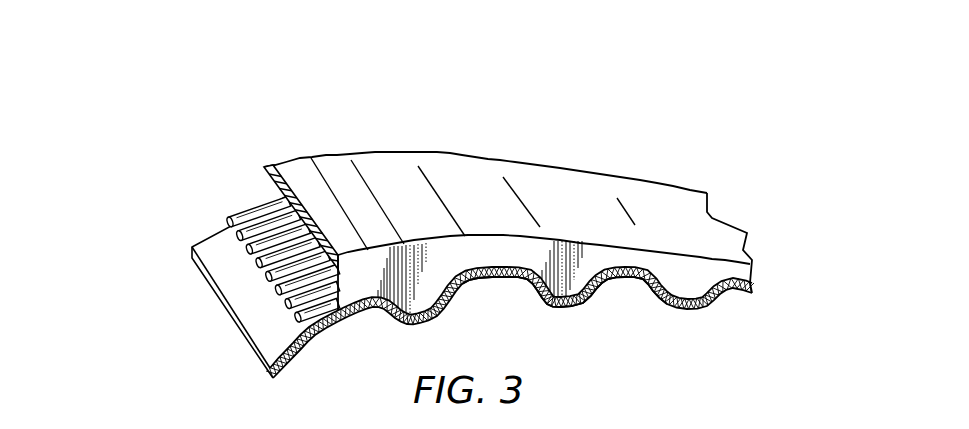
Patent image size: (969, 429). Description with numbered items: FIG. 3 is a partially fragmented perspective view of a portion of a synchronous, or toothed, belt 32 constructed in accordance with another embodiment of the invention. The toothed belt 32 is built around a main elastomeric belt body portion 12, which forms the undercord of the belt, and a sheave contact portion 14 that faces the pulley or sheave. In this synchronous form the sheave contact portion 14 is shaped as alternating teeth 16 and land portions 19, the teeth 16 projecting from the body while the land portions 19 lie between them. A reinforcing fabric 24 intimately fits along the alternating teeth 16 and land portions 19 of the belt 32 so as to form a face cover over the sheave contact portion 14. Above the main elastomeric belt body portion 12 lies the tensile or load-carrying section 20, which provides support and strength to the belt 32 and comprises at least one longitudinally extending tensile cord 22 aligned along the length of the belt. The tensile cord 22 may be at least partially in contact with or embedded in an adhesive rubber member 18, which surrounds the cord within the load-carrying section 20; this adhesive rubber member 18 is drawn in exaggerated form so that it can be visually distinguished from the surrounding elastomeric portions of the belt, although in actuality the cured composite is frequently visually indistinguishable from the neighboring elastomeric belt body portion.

The toothed belt 32 is at (401, 136).
The adhesive rubber member 18 is at (272, 217).
The load-carrying section 20 is at (259, 198).
The tensile cord 22 is at (247, 250).
The main elastomeric belt body portion 12 is at (421, 294).
The land portions 19 is at (485, 283).
The reinforcing fabric 24 is at (562, 307).
The sheave contact portion 14 is at (647, 295).
The teeth 16 is at (705, 307).